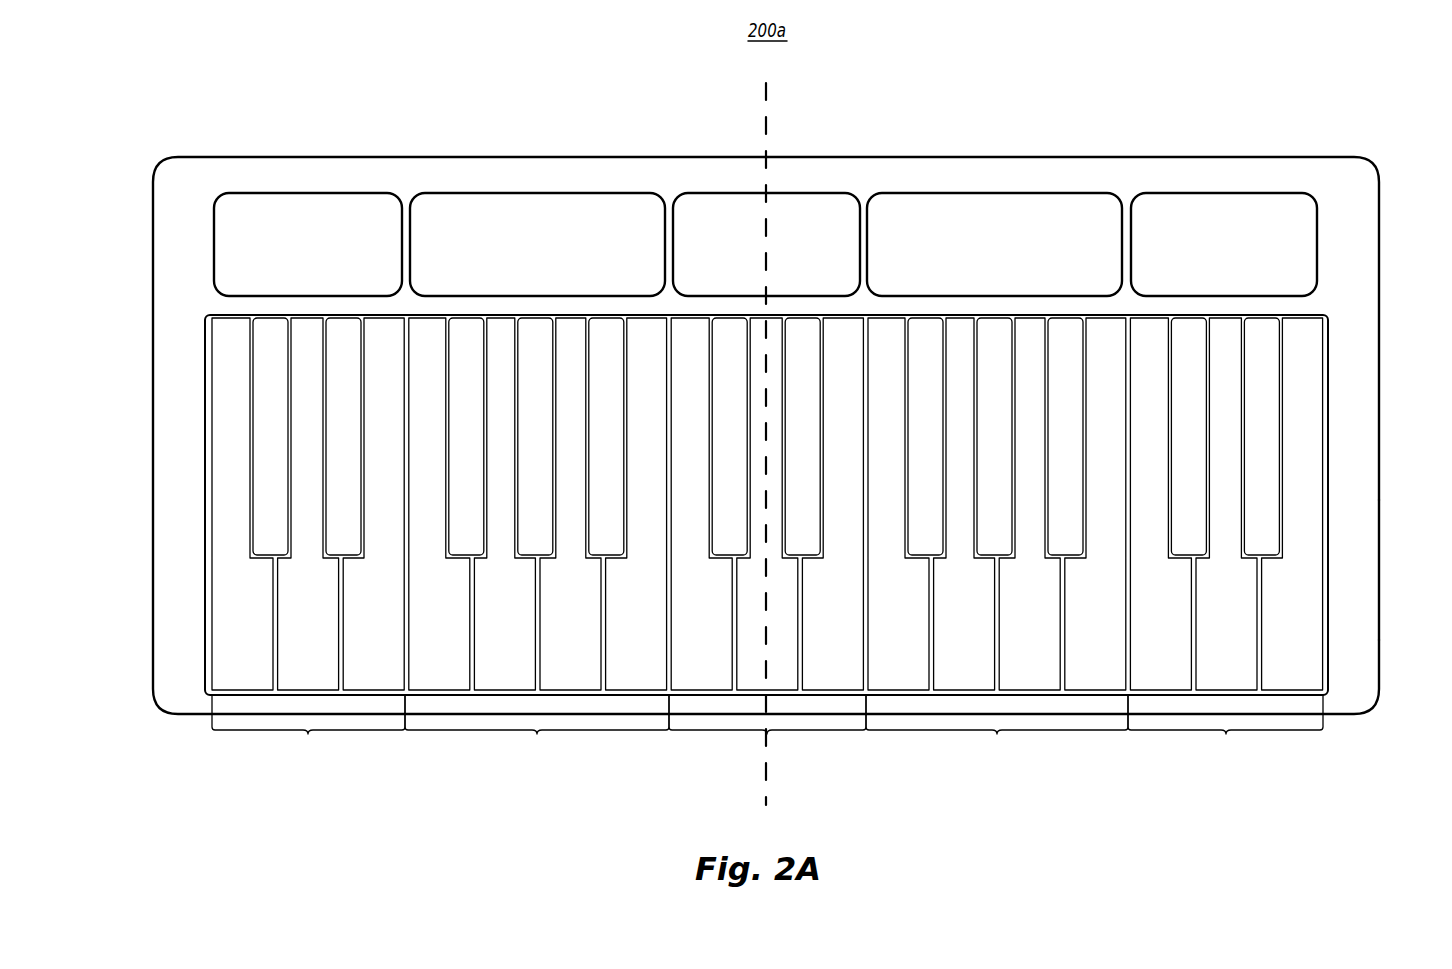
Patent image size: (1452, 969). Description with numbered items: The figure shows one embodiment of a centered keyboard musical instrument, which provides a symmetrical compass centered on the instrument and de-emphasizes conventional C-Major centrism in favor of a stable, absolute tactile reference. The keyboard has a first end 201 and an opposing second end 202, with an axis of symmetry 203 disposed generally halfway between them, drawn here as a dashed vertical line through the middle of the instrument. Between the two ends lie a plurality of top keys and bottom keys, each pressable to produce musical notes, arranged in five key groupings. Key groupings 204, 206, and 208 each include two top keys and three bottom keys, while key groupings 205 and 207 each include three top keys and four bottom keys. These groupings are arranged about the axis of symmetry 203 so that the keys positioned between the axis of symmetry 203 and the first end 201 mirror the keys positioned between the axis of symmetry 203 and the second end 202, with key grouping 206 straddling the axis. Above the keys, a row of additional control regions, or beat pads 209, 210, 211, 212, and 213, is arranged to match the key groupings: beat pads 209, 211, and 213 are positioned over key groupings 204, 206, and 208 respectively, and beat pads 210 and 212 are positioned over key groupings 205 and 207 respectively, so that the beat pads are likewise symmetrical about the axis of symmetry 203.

The first end 201 is at (153, 463).
The second end 202 is at (1379, 577).
The axis of symmetry 203 is at (766, 98).
The key grouping 204 is at (308, 542).
The key grouping 205 is at (537, 542).
The key grouping 206 is at (766, 732).
The key grouping 207 is at (997, 542).
The key grouping 208 is at (1225, 542).
The beat pad 209 is at (319, 207).
The beat pad 210 is at (548, 207).
The beat pad 211 is at (820, 207).
The beat pad 212 is at (993, 207).
The beat pad 213 is at (1235, 207).